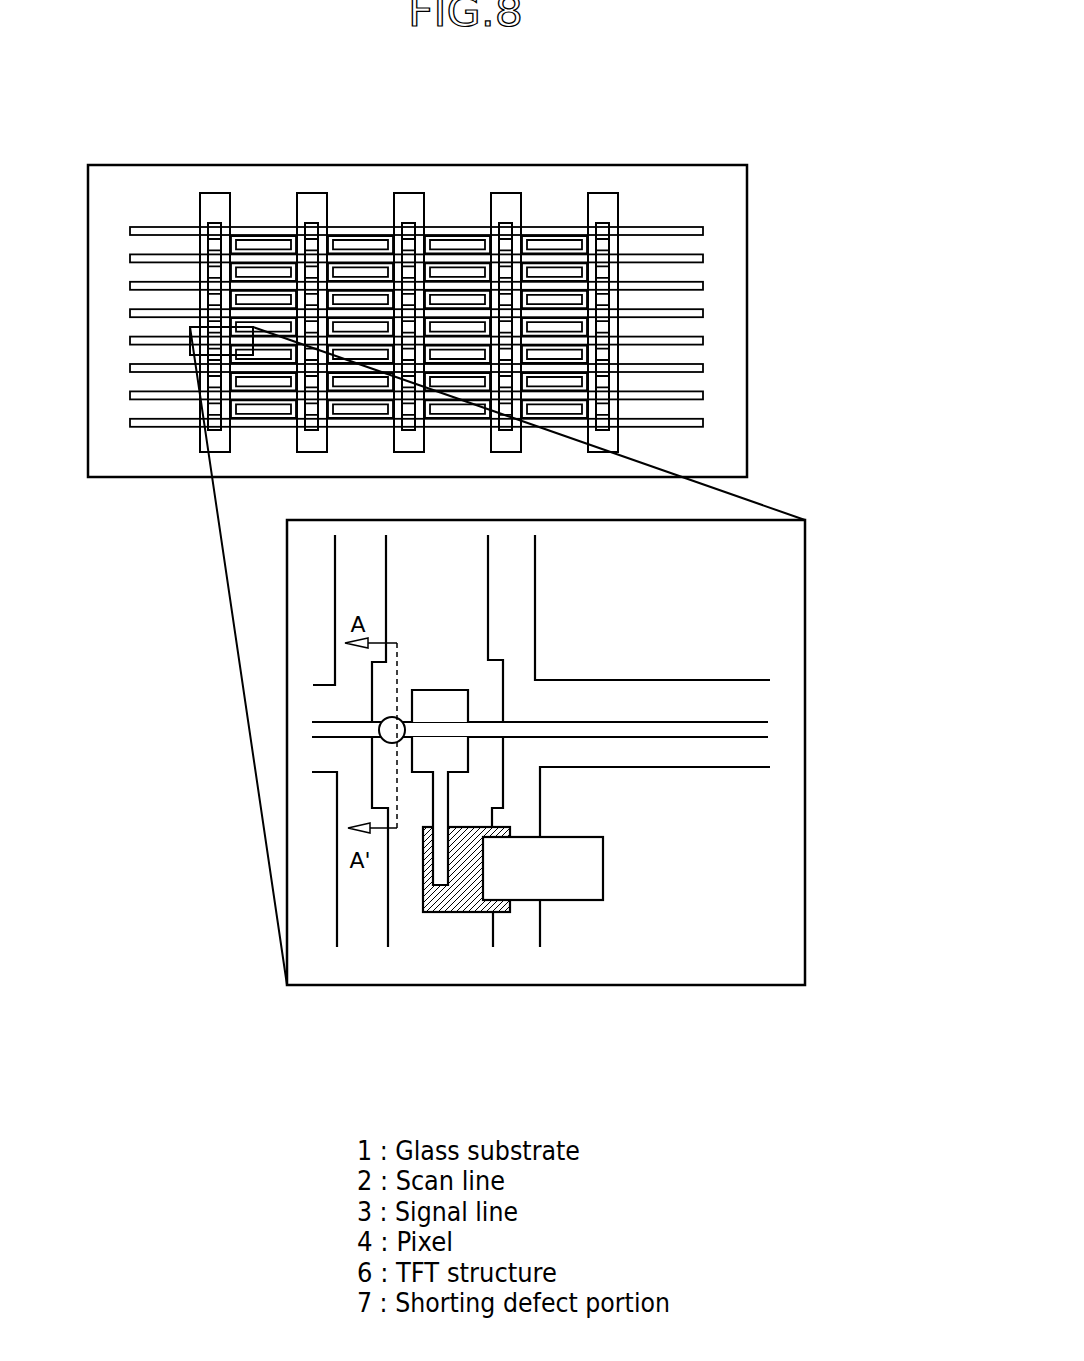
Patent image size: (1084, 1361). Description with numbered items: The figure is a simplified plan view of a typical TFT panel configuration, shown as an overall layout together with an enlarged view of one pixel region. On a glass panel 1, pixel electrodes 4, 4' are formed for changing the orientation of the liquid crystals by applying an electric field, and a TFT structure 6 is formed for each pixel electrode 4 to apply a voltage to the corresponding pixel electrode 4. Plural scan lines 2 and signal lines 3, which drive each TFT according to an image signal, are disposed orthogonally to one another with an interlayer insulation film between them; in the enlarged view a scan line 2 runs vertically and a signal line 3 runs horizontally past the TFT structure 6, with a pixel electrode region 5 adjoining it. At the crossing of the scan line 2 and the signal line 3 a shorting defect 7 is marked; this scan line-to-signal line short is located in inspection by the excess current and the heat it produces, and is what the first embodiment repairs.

The glass panel 1 is at (713, 175).
The scan line 2 is at (598, 192).
The signal line 3 is at (688, 226).
The pixel electrode 4 is at (562, 591).
The pixel electrode 4' is at (617, 610).
The Pixel electrode 5 is at (583, 890).
The TFT structure 6 is at (470, 912).
The shorting defect 7 is at (380, 742).